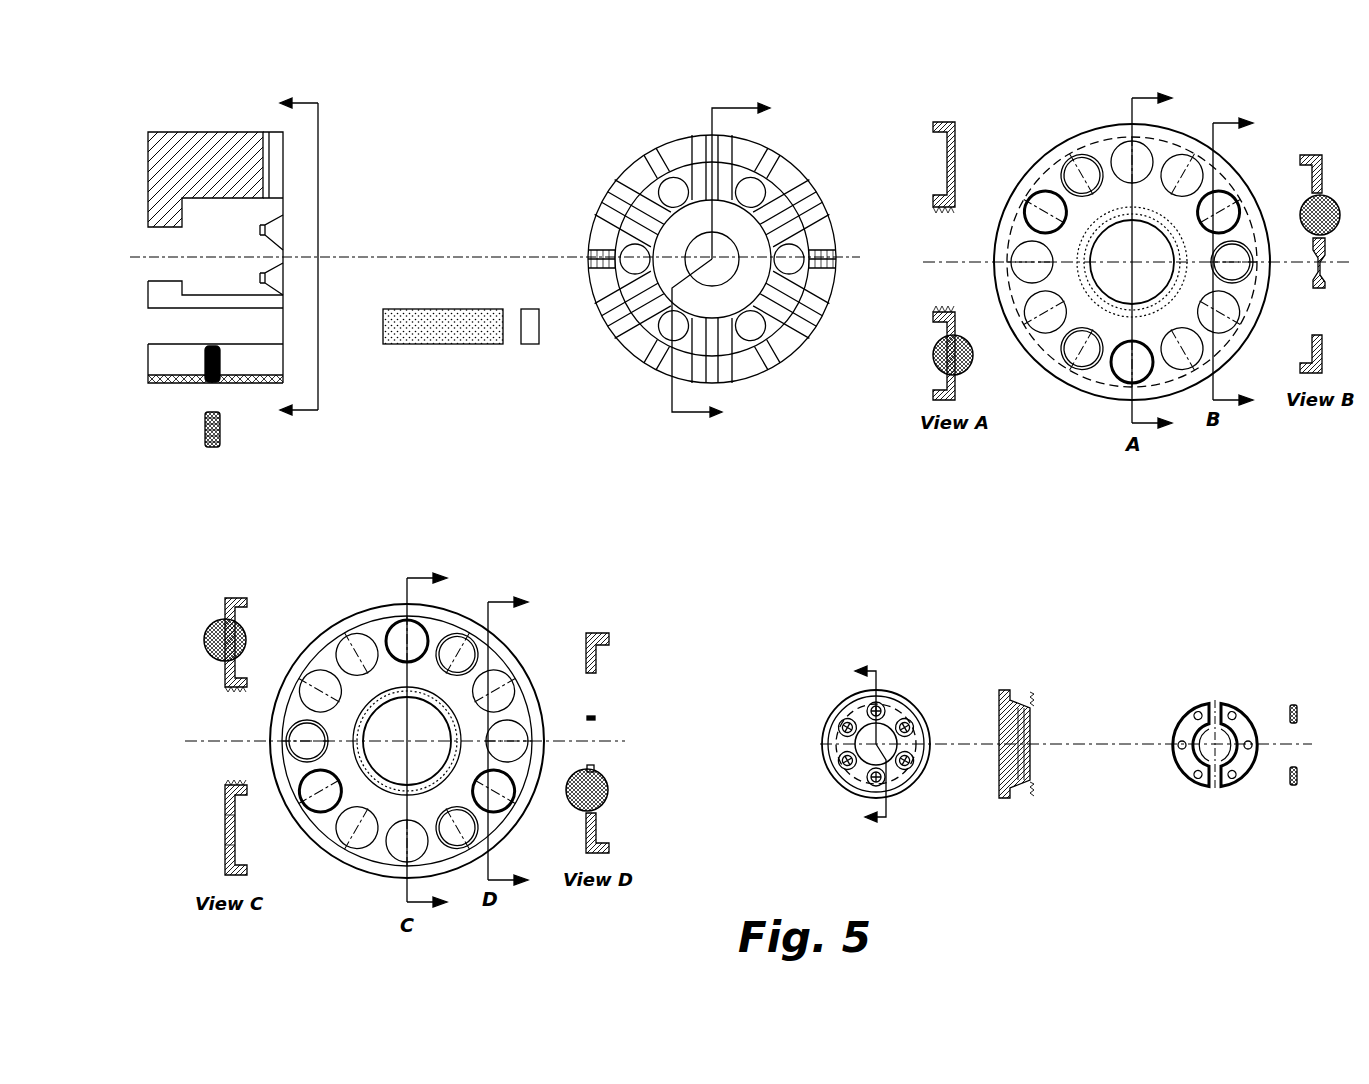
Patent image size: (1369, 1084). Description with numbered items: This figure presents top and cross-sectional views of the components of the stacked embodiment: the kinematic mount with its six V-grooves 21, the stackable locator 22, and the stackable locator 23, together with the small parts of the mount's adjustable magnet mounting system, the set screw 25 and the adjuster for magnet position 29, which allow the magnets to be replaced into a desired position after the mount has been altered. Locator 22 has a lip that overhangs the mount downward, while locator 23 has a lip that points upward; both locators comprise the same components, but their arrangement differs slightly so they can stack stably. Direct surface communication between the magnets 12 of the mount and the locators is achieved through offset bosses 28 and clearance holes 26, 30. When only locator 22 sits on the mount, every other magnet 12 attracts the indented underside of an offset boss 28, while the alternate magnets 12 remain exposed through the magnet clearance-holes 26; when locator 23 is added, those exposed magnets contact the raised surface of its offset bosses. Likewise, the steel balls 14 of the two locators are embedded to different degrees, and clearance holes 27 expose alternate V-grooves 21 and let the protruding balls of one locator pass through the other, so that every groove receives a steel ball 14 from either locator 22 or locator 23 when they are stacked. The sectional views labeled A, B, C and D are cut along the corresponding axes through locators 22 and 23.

The magnet 12 is at (527, 337).
The steel ball 14 is at (1142, 157).
The V-groove 21 is at (208, 142).
The stackable locator 22 is at (1078, 367).
The stackable locator 23 is at (355, 845).
The set screw 25 is at (202, 430).
The magnet clearance-hole 26 is at (1090, 185).
The clearance-hole 27 is at (1045, 206).
The offset boss 28 is at (1177, 188).
The adjuster for magnet position 29 is at (432, 337).
The clearance hole 30 is at (450, 658).